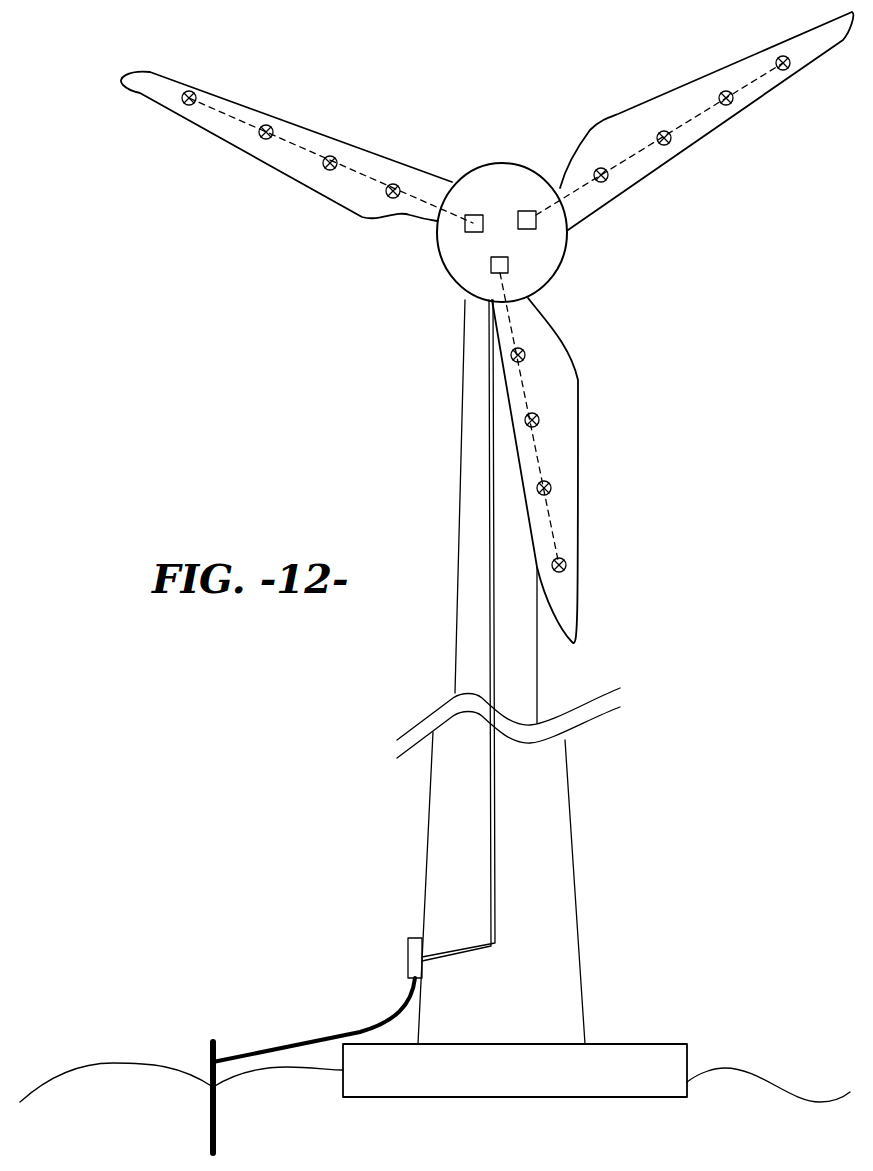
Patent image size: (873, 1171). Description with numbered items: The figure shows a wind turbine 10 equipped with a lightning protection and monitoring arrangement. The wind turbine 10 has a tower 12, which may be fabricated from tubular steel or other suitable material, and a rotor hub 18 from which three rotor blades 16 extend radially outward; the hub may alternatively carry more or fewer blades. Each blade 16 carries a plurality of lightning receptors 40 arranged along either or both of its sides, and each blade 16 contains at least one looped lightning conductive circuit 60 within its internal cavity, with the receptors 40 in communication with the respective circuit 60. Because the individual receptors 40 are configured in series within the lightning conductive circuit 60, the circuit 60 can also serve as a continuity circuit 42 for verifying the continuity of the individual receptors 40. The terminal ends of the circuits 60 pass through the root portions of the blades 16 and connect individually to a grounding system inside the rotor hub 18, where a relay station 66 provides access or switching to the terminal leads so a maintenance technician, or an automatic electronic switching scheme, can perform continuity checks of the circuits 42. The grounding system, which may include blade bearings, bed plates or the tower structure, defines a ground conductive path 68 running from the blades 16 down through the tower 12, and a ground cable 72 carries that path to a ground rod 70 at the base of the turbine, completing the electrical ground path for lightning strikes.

The wind turbine 10 is at (480, 94).
The tower 12 is at (553, 833).
The rotor blade 16 is at (228, 130).
The rotor hub 18 is at (455, 258).
The lightning receptor 40 is at (335, 167).
The continuity circuit 42 is at (486, 314).
The lightning conductive circuit 60 is at (293, 145).
The relay station 66 is at (508, 270).
The ground conductive path 68 is at (488, 605).
The ground rod 70 is at (212, 1067).
The ground cable 72 is at (340, 1033).